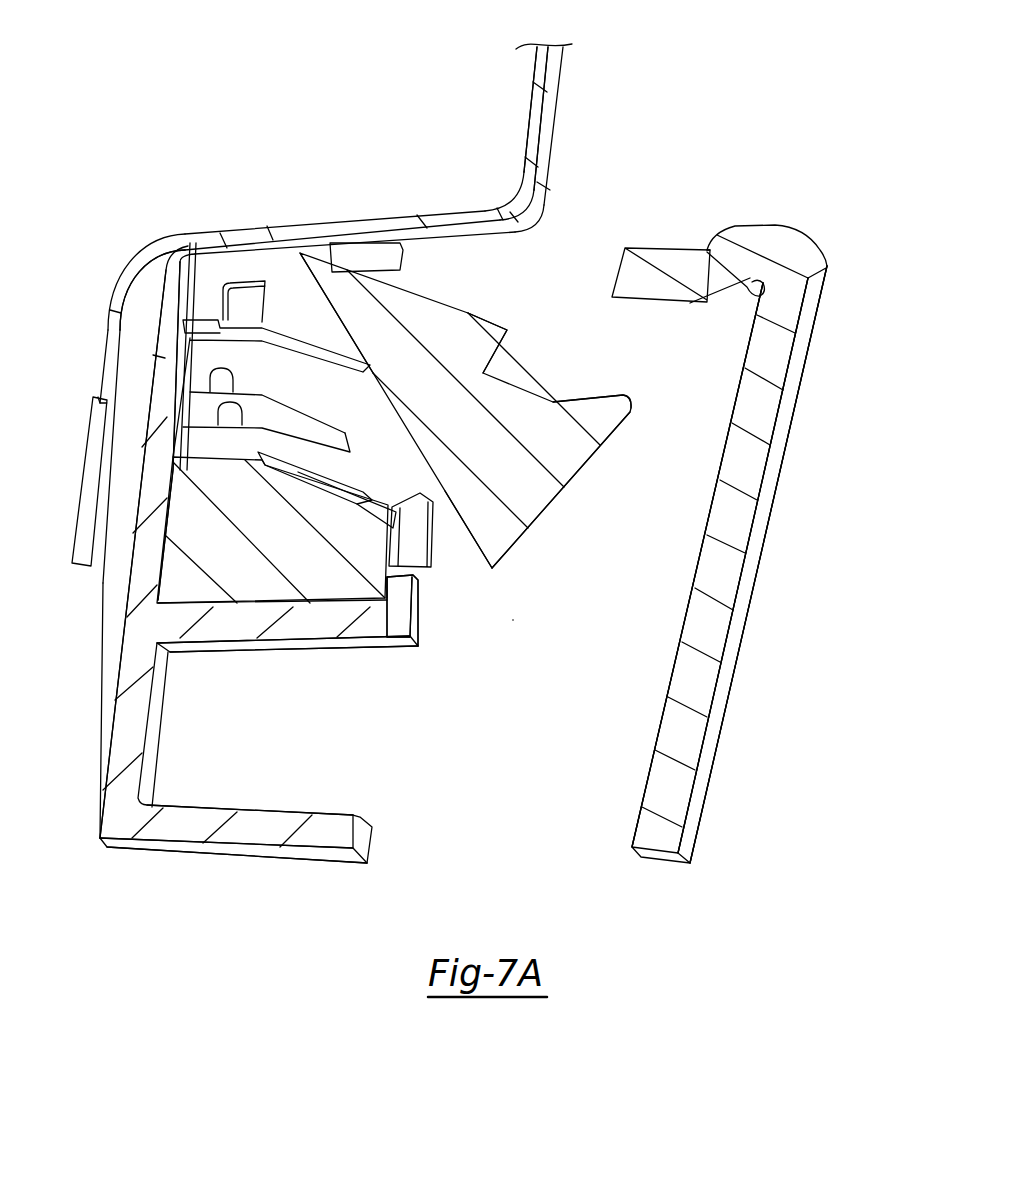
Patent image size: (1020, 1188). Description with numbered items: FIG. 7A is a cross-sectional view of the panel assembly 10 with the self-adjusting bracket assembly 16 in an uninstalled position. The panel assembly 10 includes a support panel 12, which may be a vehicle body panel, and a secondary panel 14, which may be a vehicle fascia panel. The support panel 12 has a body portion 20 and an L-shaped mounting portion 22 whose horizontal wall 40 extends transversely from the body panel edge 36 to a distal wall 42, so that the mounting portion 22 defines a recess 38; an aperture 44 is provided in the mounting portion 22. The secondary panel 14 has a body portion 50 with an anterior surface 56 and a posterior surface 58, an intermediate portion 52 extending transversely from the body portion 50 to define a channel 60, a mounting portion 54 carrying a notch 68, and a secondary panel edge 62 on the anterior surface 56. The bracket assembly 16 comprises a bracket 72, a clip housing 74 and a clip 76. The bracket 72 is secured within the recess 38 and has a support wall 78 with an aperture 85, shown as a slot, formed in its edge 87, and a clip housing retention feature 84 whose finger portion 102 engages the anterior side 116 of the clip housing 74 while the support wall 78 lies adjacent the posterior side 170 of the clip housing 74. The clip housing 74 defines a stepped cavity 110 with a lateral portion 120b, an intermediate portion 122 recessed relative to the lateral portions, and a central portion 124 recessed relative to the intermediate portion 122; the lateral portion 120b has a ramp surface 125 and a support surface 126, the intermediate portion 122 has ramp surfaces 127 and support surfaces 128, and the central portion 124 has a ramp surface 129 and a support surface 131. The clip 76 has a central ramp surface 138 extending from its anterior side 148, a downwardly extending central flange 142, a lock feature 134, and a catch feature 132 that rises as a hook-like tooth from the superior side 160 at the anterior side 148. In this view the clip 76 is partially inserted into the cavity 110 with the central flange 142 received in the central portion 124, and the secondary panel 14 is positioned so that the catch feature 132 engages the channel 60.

The panel assembly 10 is at (662, 94).
The support panel 12 is at (552, 98).
The secondary panel 14 is at (710, 796).
The self-adjusting bracket assembly 16 is at (92, 789).
The body portion 20 is at (524, 130).
The mounting portion 22 is at (130, 249).
The body panel edge 36 is at (543, 184).
The recess 38 is at (109, 524).
The horizontal wall 40 is at (453, 209).
The distal wall 42 is at (85, 471).
The aperture 44 is at (102, 384).
The body portion 50 is at (707, 673).
The intermediate portion 52 is at (750, 231).
The mounting portion 54 is at (650, 250).
The anterior surface 56 is at (707, 760).
The posterior surface 58 is at (651, 767).
The channel 60 is at (752, 282).
The secondary panel edge 62 is at (825, 258).
The notch 68 is at (614, 276).
The bracket 72 is at (116, 649).
The clip housing 74 is at (210, 318).
The clip 76 is at (435, 296).
The support wall 78 is at (137, 748).
The clip housing retention feature 84 is at (260, 654).
The aperture 85 is at (174, 294).
The edge 87 is at (170, 250).
The finger portion 102 is at (425, 592).
The cavity 110 is at (372, 372).
The anterior side 116 is at (402, 606).
The lateral portion 120b is at (285, 375).
The intermediate portion 122 is at (294, 432).
The central portion 124 is at (284, 465).
The ramp surface 125 is at (313, 397).
The support surface 126 is at (243, 340).
The ramp surfaces 127 is at (287, 427).
The support surfaces 128 is at (222, 408).
The ramp surface 129 is at (306, 473).
The support surface 131 is at (192, 458).
The catch feature 132 is at (591, 400).
The lock feature 134 is at (337, 276).
The central ramp surface 138 is at (465, 548).
The central flange 142 is at (410, 490).
The anterior side 148 is at (560, 500).
The superior side 160 is at (520, 388).
The posterior side 170 is at (157, 518).